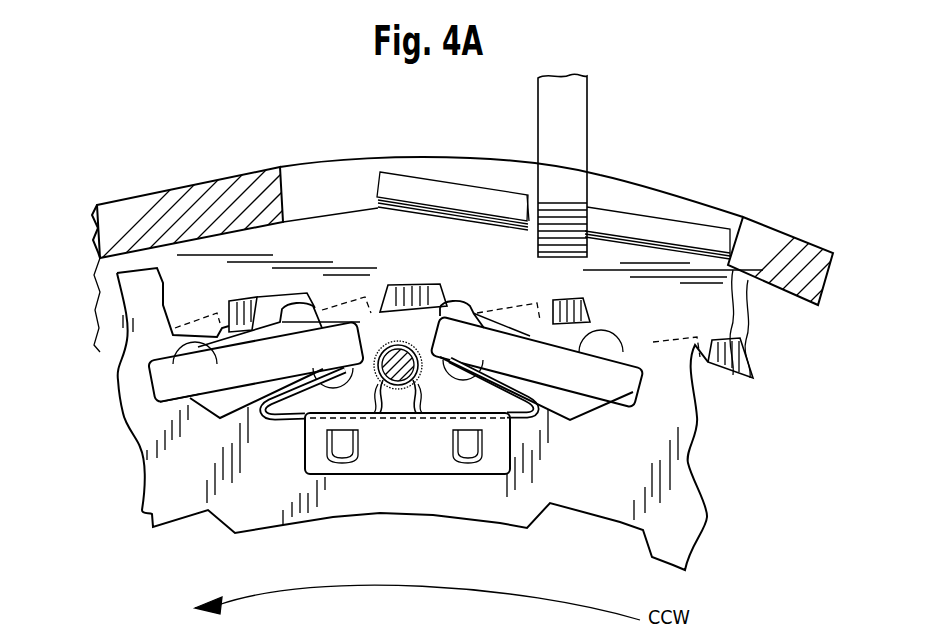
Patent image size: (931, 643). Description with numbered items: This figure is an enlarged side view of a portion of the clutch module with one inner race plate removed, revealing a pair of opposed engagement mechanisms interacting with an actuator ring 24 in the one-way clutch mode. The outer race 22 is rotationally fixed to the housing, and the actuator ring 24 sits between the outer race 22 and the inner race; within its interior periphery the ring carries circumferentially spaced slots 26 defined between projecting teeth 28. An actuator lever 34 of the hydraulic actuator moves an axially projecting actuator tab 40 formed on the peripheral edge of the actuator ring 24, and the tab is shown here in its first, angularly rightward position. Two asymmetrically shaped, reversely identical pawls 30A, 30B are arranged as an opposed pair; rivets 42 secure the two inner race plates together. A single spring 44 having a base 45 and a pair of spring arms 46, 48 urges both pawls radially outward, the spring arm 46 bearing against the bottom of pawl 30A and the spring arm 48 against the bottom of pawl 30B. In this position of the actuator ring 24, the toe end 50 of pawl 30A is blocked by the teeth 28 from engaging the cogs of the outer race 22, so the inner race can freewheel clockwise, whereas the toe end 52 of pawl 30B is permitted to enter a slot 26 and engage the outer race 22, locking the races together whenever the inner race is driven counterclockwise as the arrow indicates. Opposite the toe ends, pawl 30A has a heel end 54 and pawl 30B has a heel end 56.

The outer race 22 is at (757, 228).
The actuator ring 24 is at (455, 210).
The slots 26 is at (262, 300).
The teeth 28 is at (337, 350).
The pawl 30A is at (215, 370).
The pawl 30B is at (620, 378).
The actuator lever 34 is at (588, 145).
The actuator tab 40 is at (392, 172).
The rivets 42 is at (430, 350).
The spring 44 is at (537, 405).
The base 45 is at (307, 433).
The spring arm 46 is at (300, 412).
The spring arm 48 is at (487, 365).
The toe end 50 is at (315, 308).
The toe end 52 is at (447, 181).
The heel end 54 is at (167, 388).
The heel end 56 is at (626, 392).